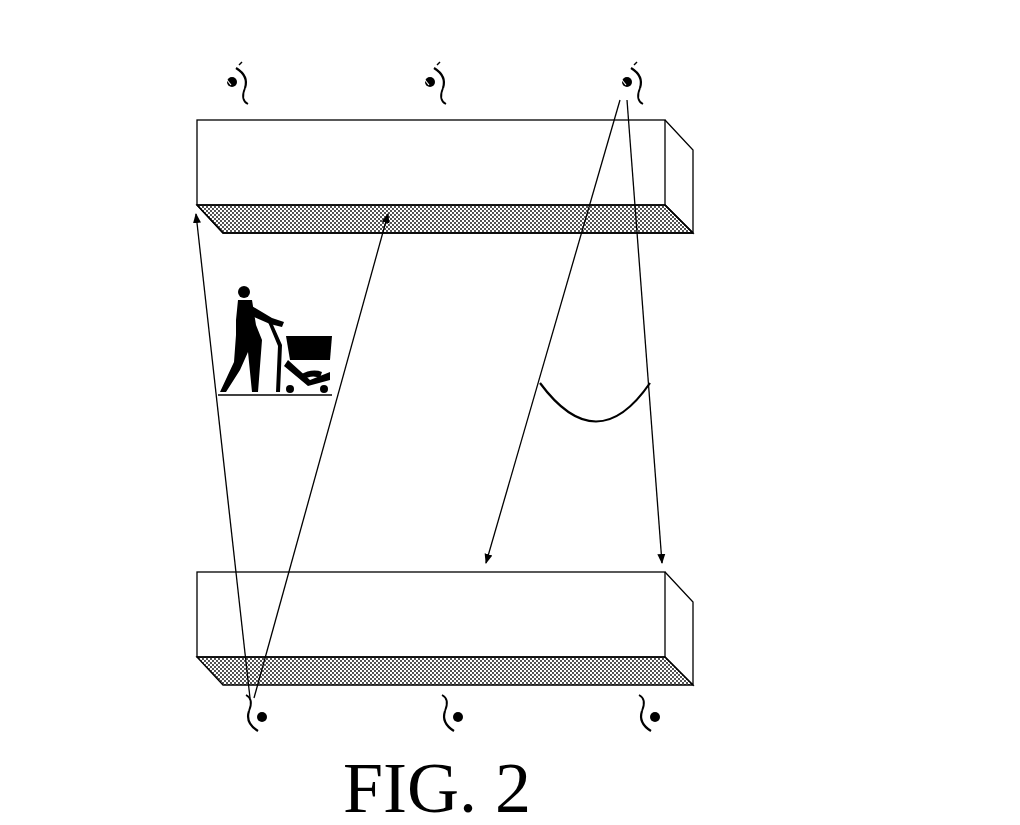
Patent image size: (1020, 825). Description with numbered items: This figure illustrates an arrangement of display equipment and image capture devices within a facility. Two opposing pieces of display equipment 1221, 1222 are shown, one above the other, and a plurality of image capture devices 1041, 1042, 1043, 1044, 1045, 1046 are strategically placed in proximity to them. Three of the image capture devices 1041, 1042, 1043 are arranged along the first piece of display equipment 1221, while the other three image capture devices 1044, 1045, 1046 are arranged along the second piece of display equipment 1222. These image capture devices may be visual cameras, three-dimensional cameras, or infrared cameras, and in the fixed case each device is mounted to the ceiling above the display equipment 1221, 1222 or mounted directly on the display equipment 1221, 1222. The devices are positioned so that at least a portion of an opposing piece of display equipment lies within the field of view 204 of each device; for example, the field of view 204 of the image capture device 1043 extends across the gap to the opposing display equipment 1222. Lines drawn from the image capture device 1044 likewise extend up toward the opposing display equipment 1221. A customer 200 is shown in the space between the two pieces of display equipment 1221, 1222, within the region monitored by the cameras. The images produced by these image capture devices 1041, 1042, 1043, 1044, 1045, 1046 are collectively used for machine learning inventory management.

The image capture device 1041 is at (262, 80).
The image capture device 1042 is at (465, 80).
The image capture device 1043 is at (653, 80).
The image capture device 1044 is at (244, 704).
The image capture device 1045 is at (432, 704).
The image capture device 1046 is at (637, 704).
The display equipment 1221 is at (702, 186).
The display equipment 1222 is at (702, 630).
The customer 200 is at (218, 343).
The field of view 204 is at (577, 331).